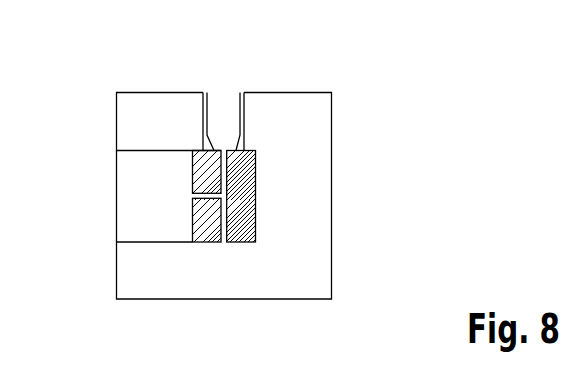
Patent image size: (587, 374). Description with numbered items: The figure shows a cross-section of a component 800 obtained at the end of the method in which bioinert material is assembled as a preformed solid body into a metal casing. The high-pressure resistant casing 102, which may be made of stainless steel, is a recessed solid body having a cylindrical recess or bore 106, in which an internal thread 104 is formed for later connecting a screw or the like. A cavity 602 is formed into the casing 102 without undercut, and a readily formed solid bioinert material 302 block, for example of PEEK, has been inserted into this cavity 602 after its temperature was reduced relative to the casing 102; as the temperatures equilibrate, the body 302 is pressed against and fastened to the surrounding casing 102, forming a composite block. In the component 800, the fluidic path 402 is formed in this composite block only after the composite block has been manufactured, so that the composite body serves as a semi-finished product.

The component 800 is at (251, 183).
The casing 102 is at (322, 118).
The internal thread 104 is at (230, 103).
The recess or bore 106 is at (221, 133).
The solid bioinert material block 302 is at (240, 200).
The fluidic path 402 is at (225, 195).
The cavity 602 is at (146, 198).